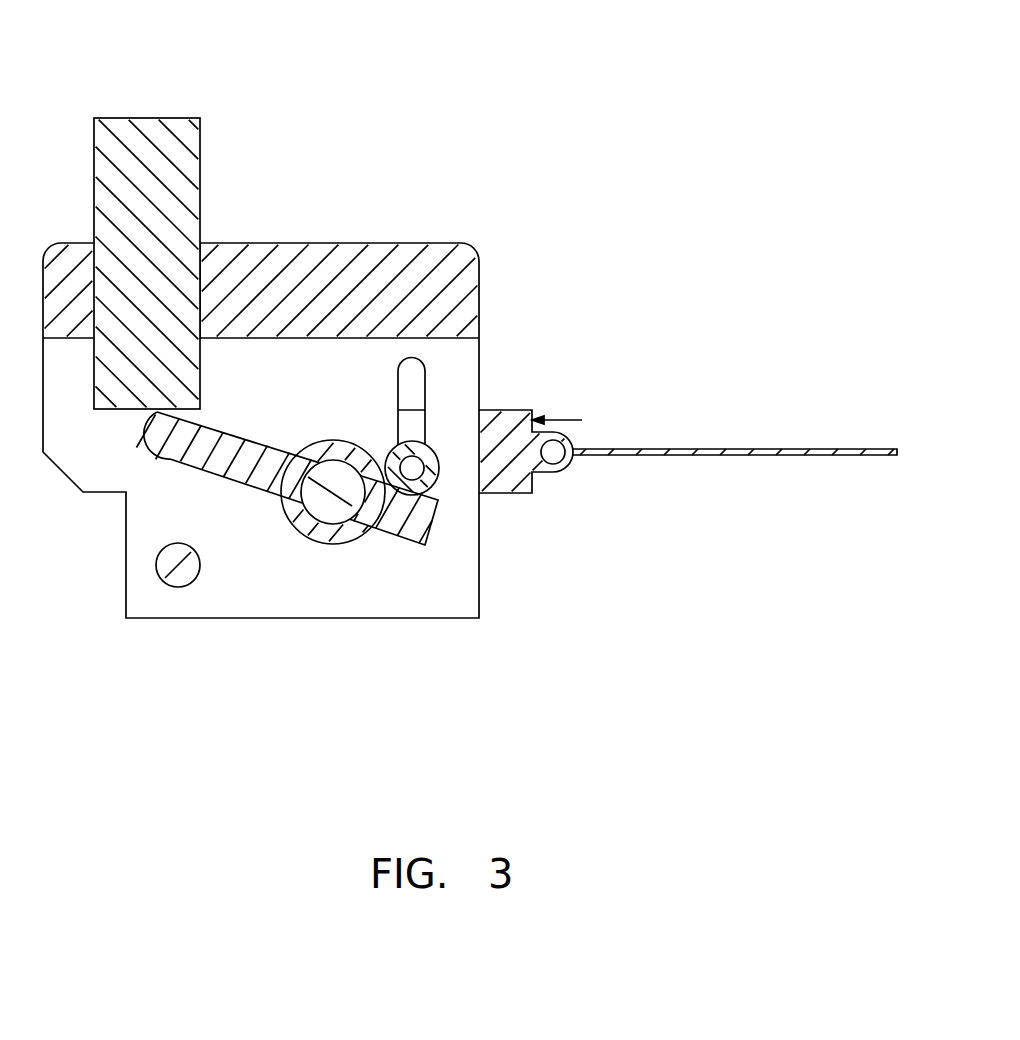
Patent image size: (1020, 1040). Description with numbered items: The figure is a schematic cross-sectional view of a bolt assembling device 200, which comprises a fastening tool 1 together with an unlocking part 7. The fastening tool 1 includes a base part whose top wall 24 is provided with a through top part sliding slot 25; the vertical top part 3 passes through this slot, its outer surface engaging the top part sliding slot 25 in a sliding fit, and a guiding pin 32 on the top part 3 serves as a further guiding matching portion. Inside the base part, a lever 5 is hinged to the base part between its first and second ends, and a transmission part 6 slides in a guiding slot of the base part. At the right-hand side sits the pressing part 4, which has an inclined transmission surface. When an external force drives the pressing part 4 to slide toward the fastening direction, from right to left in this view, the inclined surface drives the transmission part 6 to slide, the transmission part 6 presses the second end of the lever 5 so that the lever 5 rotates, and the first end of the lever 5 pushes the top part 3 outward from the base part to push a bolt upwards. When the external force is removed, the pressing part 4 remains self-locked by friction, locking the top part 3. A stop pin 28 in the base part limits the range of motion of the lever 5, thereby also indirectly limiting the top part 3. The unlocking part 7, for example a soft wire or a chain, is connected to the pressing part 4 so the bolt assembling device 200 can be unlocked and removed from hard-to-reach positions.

The bolt assembling device 200 is at (64, 36).
The fastening tool 1 is at (467, 185).
The top part 3 is at (113, 163).
The pressing part 4 is at (505, 423).
The lever 5 is at (325, 505).
The transmission part 6 is at (413, 475).
The unlocking part 7 is at (763, 448).
The top wall 24 is at (405, 285).
The top part sliding slot 25 is at (203, 252).
The stop pin 28 is at (165, 572).
The guiding pin 32 is at (134, 314).